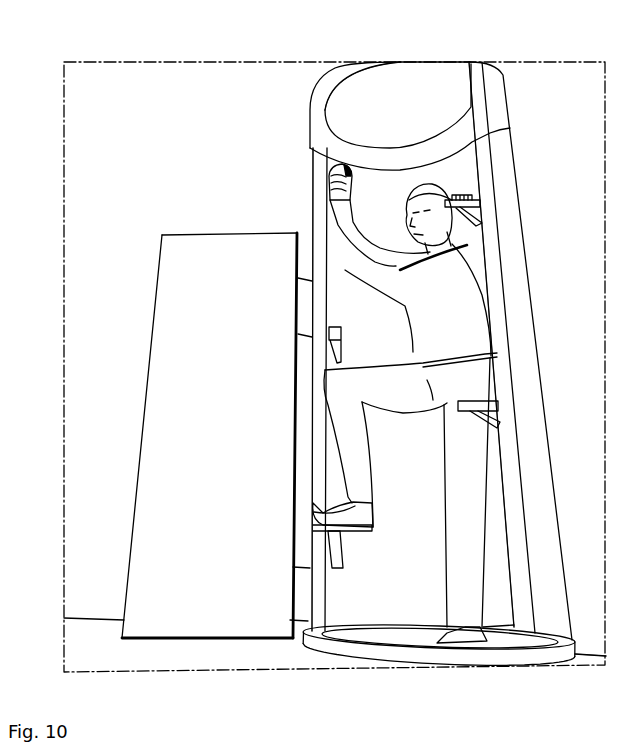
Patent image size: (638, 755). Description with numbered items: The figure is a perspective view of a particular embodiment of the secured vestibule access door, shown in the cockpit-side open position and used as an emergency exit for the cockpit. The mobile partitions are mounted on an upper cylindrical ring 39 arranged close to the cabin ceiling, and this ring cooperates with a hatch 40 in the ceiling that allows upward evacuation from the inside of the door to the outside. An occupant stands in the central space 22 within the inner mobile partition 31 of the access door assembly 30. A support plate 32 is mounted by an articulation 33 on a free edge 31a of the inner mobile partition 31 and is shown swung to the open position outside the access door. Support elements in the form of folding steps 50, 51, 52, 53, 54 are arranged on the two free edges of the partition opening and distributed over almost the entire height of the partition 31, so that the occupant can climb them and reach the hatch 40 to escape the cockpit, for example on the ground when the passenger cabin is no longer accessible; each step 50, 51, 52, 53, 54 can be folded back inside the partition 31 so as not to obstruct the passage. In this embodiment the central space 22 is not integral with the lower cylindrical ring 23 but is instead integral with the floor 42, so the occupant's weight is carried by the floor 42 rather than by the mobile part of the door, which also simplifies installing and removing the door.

The central space 22 is at (407, 630).
The lower cylindrical ring 23 is at (347, 651).
The booth frame 30 is at (505, 155).
The inner mobile partition 31 is at (487, 248).
The free edge 31a is at (320, 195).
The support plate 32 is at (222, 232).
The articulation 33 is at (299, 233).
The upper cylindrical ring 39 is at (490, 63).
The hatch 40 is at (400, 124).
The floor 42 is at (580, 664).
The step 50 is at (340, 550).
The step 51 is at (343, 342).
The step 52 is at (333, 177).
The step 53 is at (500, 403).
The step 54 is at (495, 203).